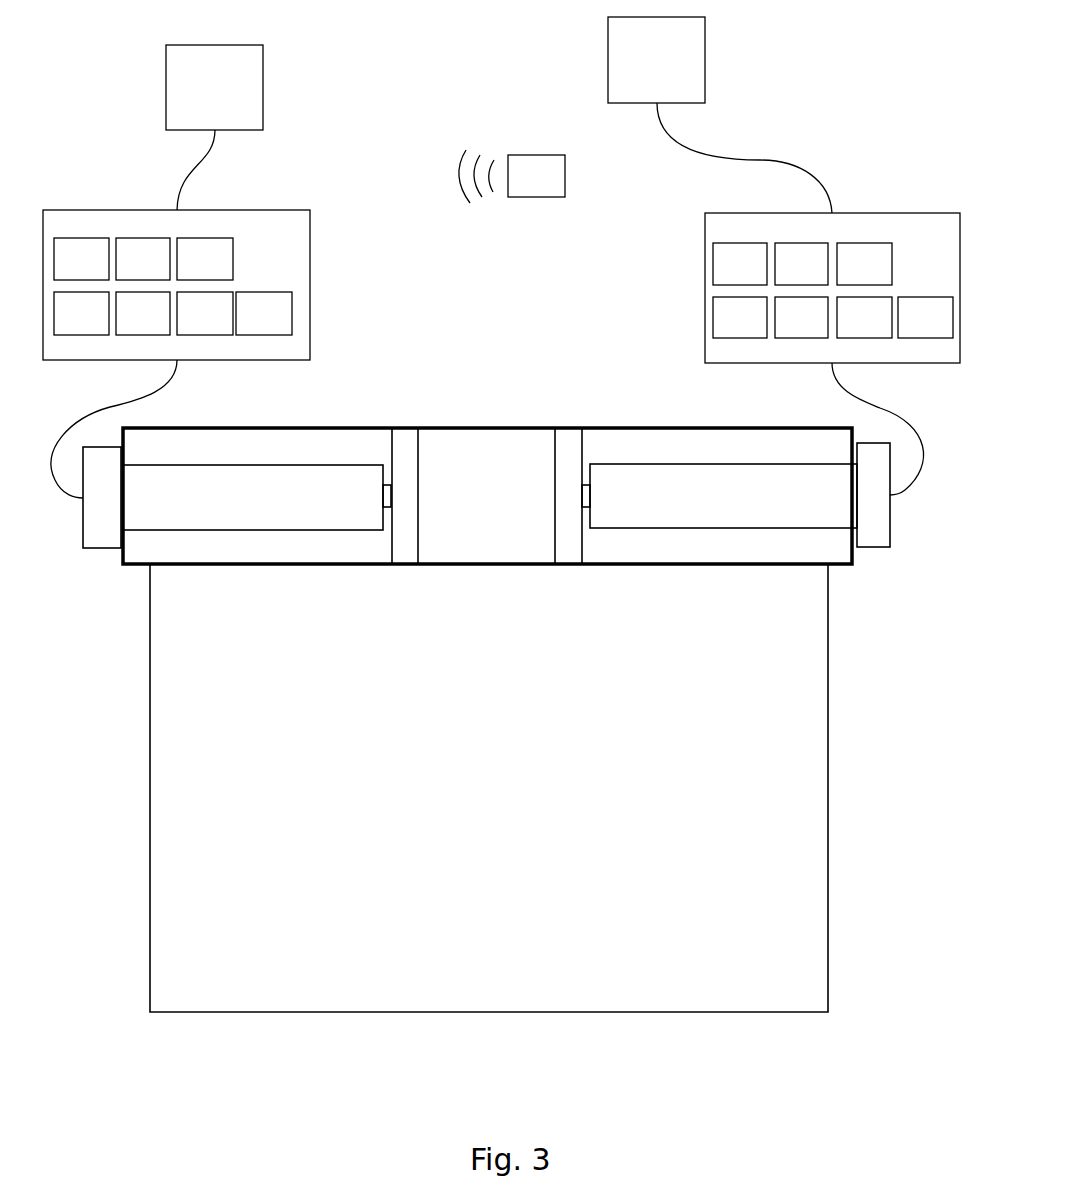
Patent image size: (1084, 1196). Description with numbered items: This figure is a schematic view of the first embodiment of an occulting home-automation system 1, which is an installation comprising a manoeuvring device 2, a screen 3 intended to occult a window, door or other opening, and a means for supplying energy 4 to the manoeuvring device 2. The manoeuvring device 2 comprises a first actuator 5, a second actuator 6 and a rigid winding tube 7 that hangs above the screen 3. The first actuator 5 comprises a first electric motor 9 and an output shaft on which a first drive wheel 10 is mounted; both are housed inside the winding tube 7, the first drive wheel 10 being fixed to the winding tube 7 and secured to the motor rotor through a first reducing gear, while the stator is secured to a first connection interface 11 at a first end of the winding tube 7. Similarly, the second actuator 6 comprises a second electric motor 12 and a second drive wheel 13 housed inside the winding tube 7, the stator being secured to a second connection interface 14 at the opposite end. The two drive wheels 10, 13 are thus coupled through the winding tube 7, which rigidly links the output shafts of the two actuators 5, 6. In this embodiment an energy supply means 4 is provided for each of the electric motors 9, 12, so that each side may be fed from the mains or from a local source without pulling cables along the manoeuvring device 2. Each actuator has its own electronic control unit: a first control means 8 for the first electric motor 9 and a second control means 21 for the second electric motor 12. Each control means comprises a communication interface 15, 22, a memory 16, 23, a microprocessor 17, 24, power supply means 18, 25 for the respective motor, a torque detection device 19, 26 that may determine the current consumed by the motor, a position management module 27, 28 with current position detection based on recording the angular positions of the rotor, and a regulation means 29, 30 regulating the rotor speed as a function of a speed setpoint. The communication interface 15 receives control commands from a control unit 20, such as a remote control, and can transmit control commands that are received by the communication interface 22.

The occulting home-automation system 1 is at (807, 87).
The manoeuvring device 2 is at (445, 388).
The screen 3 is at (820, 785).
The means for supplying energy 4 is at (435, 73).
The first actuator 5 is at (257, 555).
The second actuator 6 is at (719, 552).
The winding tube 7 is at (518, 566).
The first control means 8 is at (285, 210).
The first electric motor 9 is at (254, 550).
The first drive wheel 10 is at (403, 532).
The first connection interface 11 is at (108, 535).
The second electric motor 12 is at (660, 547).
The second drive wheel 13 is at (568, 513).
The second connection interface 14 is at (877, 538).
The communication interface 15 is at (81, 259).
The memory 16 is at (143, 259).
The microprocessor 17 is at (205, 259).
The power supply means 18 is at (81, 313).
The torque detection device 19 is at (143, 313).
The control unit 20 is at (512, 176).
The second control means 21 is at (887, 213).
The communication interface 22 is at (740, 264).
The memory 23 is at (801, 264).
The microprocessor 24 is at (864, 264).
The power supply means 25 is at (740, 317).
The torque detection device 26 is at (801, 317).
The position management module 27 is at (205, 313).
The position management module 28 is at (864, 317).
The regulation means 29 is at (264, 313).
The regulation means 30 is at (925, 317).